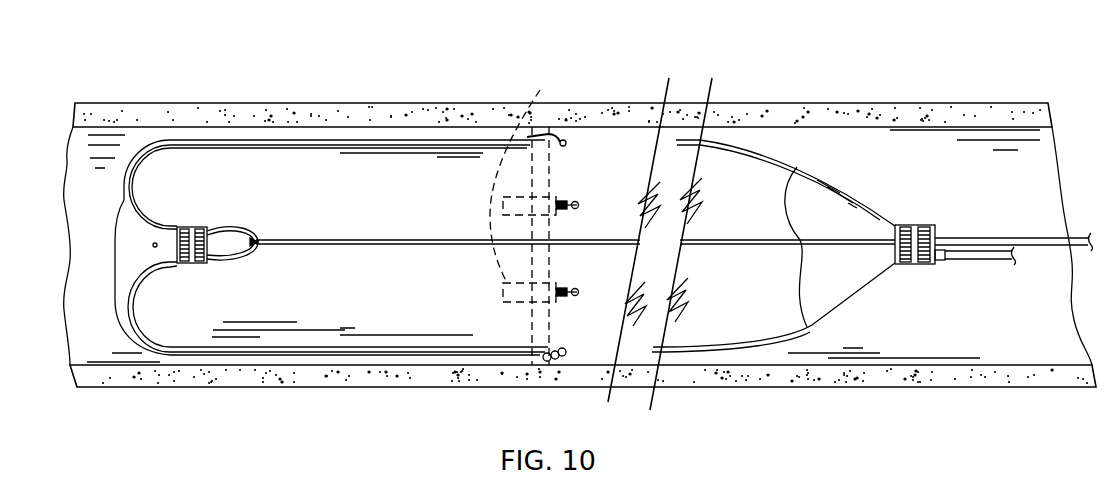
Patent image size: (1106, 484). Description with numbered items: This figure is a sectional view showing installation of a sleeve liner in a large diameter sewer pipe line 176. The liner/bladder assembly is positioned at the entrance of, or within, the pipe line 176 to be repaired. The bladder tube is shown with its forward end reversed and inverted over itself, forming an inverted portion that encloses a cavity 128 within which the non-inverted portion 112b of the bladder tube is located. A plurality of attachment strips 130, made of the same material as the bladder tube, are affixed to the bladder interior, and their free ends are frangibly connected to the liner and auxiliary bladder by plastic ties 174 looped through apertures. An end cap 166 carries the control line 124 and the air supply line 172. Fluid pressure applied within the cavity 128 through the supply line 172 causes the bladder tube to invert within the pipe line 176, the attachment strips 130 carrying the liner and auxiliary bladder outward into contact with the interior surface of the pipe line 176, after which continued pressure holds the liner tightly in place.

The pipe line 176 is at (192, 105).
The cavity 128 is at (368, 163).
The attachment strips 130 is at (523, 215).
The plastic ties 174 is at (566, 142).
The non-inverted portion of bladder tube 112b is at (740, 142).
The end cap 166 is at (912, 225).
The control line 124 is at (980, 237).
The air supply line 172 is at (957, 263).